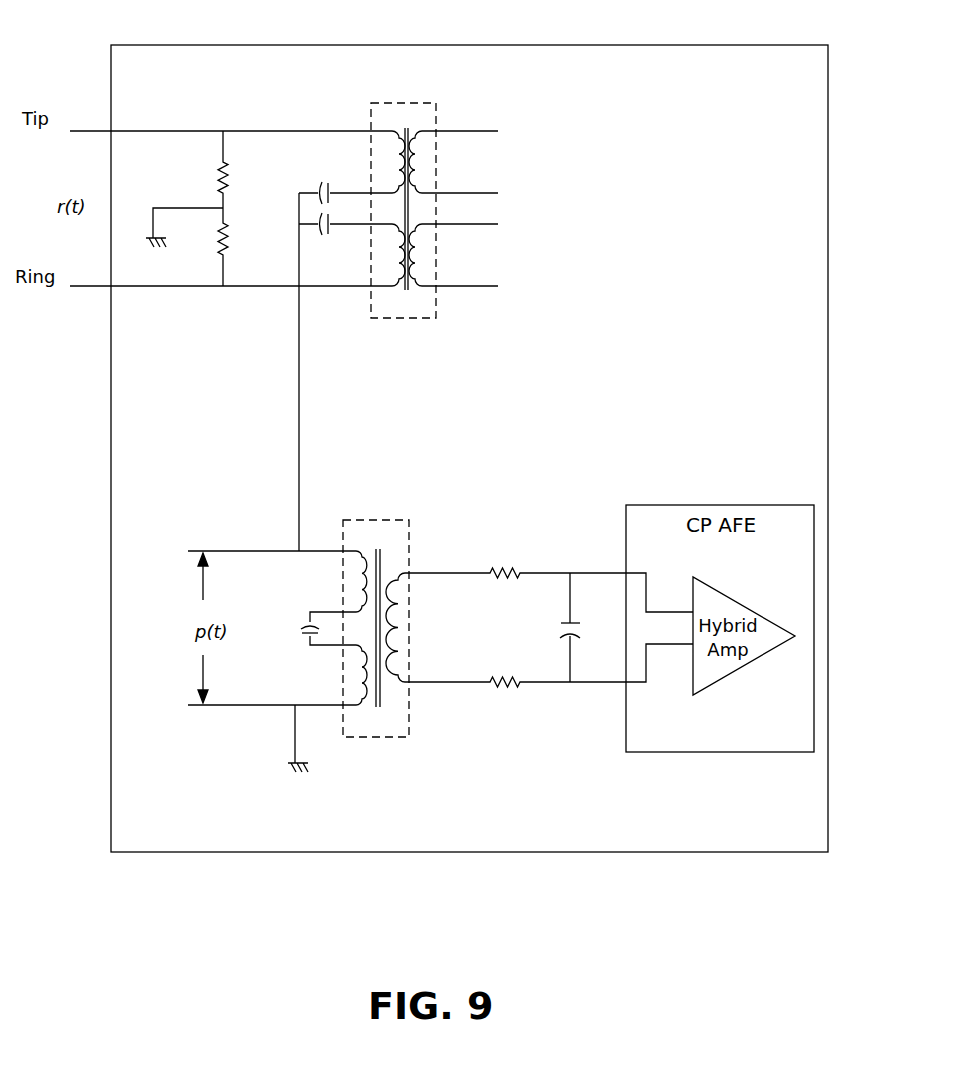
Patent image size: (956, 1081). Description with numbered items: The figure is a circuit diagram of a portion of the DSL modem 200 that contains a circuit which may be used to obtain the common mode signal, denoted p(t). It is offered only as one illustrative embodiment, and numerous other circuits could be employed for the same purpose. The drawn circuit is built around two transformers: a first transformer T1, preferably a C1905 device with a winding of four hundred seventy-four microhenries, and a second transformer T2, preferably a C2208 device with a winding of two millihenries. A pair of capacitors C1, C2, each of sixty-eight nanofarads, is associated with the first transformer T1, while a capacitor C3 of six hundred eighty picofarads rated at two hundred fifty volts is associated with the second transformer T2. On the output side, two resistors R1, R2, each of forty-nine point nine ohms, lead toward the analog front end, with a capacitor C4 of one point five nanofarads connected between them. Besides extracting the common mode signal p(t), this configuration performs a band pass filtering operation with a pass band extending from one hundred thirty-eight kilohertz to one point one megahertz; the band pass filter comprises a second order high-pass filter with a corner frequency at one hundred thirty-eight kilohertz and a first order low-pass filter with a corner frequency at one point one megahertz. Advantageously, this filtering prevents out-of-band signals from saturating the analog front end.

The DSL modem 200 is at (503, 44).
The transformer T1 is at (392, 103).
The transformer T2 is at (370, 520).
The capacitor C1 is at (323, 184).
The capacitor C2 is at (323, 236).
The capacitor C3 is at (306, 626).
The capacitor C4 is at (561, 622).
The resistor R1 is at (505, 568).
The resistor R2 is at (505, 678).